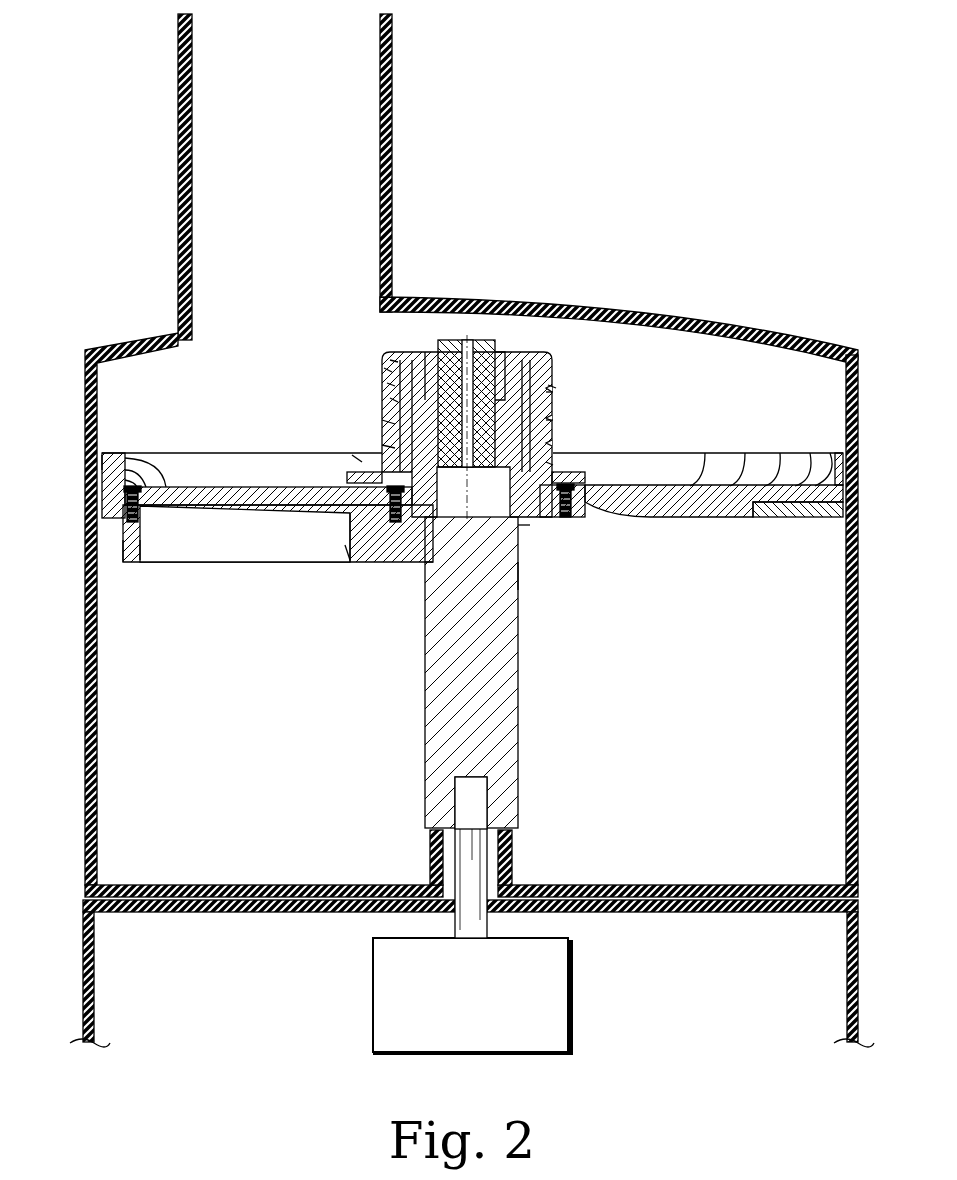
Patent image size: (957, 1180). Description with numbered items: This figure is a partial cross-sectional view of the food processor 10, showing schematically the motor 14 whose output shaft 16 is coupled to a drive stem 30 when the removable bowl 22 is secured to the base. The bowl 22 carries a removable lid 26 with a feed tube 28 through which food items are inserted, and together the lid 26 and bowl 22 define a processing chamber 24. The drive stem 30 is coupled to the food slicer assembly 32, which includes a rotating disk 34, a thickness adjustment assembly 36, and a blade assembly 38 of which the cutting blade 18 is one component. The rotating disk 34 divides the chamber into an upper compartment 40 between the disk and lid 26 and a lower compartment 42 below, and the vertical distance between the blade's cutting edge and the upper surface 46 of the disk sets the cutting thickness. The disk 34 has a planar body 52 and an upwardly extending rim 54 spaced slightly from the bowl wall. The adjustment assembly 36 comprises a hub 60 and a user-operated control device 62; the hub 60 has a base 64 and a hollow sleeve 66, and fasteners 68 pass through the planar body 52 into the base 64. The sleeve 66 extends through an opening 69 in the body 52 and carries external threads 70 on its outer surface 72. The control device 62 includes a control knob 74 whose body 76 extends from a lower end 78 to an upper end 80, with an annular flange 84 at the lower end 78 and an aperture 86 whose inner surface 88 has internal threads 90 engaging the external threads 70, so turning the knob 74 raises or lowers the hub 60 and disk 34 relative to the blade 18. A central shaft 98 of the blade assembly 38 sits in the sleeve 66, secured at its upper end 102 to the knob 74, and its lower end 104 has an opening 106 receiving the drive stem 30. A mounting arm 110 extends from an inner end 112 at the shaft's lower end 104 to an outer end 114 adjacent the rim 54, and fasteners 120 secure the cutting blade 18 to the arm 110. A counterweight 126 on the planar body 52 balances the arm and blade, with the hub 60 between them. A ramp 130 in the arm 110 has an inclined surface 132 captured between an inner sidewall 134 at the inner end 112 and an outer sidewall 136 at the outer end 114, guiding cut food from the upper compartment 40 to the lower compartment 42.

The food processor 10 is at (738, 95).
The motor 14 is at (568, 1000).
The output shaft 16 is at (466, 865).
The cutting blade 18 is at (290, 487).
The removable bowl 22 is at (856, 776).
The processing chamber 24 is at (833, 656).
The removable lid 26 is at (140, 340).
The feed tube 28 is at (178, 158).
The drive stem 30 is at (425, 714).
The food slicer assembly 32 is at (306, 356).
The rotating disk 34 is at (786, 453).
The thickness adjustment assembly 36 is at (366, 358).
The blade assembly 38 is at (375, 586).
The upper compartment 40 is at (146, 405).
The lower compartment 42 is at (805, 838).
The upper surface 46 is at (128, 482).
The planar body 52 is at (680, 487).
The rim 54 is at (102, 458).
The hub 60 is at (565, 518).
The user-operated control device 62 is at (389, 385).
The base 64 is at (588, 518).
The hollow sleeve 66 is at (392, 360).
The fasteners 68 is at (580, 481).
The opening 69 is at (528, 536).
The external threads 70 is at (384, 422).
The outer surface 72 is at (384, 446).
The control knob 74 is at (386, 372).
The body 76 is at (392, 400).
The lower end 78 is at (556, 465).
The upper end 80 is at (500, 360).
The annular flange 84 is at (349, 476).
The aperture 86 is at (554, 392).
The inner surface 88 is at (554, 419).
The internal threads 90 is at (354, 458).
The central shaft 98 is at (415, 362).
The upper end 102 is at (466, 418).
The lower end 104 is at (425, 580).
The opening 106 is at (520, 588).
The mounting arm 110 is at (402, 563).
The inner end 112 is at (368, 563).
The outer end 114 is at (128, 563).
The fasteners 120 is at (140, 520).
The counterweight 126 is at (790, 518).
The ramp 130 is at (251, 568).
The inclined surface 132 is at (280, 578).
The inner sidewall 134 is at (347, 560).
The outer sidewall 136 is at (142, 560).